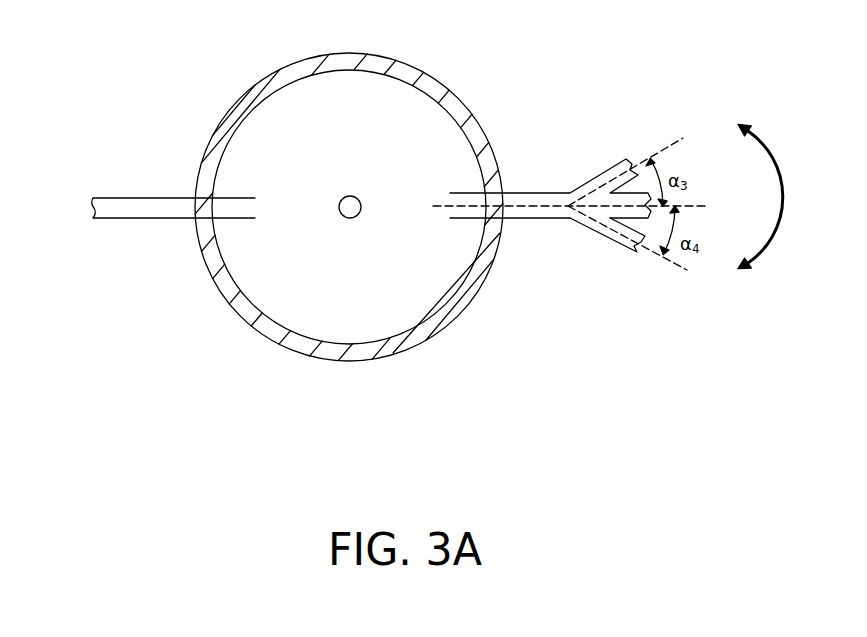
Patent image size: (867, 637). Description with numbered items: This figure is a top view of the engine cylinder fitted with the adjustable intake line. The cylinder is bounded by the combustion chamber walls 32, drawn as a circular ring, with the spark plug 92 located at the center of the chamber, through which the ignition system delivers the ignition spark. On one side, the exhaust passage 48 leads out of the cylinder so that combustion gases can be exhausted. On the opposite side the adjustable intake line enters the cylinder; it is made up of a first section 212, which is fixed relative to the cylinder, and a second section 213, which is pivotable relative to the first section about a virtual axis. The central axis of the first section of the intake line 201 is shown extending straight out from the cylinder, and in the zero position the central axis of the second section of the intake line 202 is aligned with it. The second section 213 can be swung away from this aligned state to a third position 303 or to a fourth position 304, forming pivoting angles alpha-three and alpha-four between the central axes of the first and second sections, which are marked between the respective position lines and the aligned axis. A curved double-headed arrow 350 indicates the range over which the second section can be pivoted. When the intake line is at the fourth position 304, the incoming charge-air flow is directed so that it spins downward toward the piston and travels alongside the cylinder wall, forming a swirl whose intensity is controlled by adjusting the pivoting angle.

The combustion chamber walls 32 is at (408, 80).
The spark plug 92 is at (342, 195).
The exhaust passage 48 is at (122, 198).
The central axis of the first section of the intake line 201 is at (530, 193).
The first section 212 is at (531, 219).
The second section 213 is at (603, 236).
The central axis of the second section of the intake line 202 is at (722, 190).
The third position 303 is at (665, 149).
The fourth position 304 is at (668, 260).
The rotation direction arrow 350 is at (783, 168).